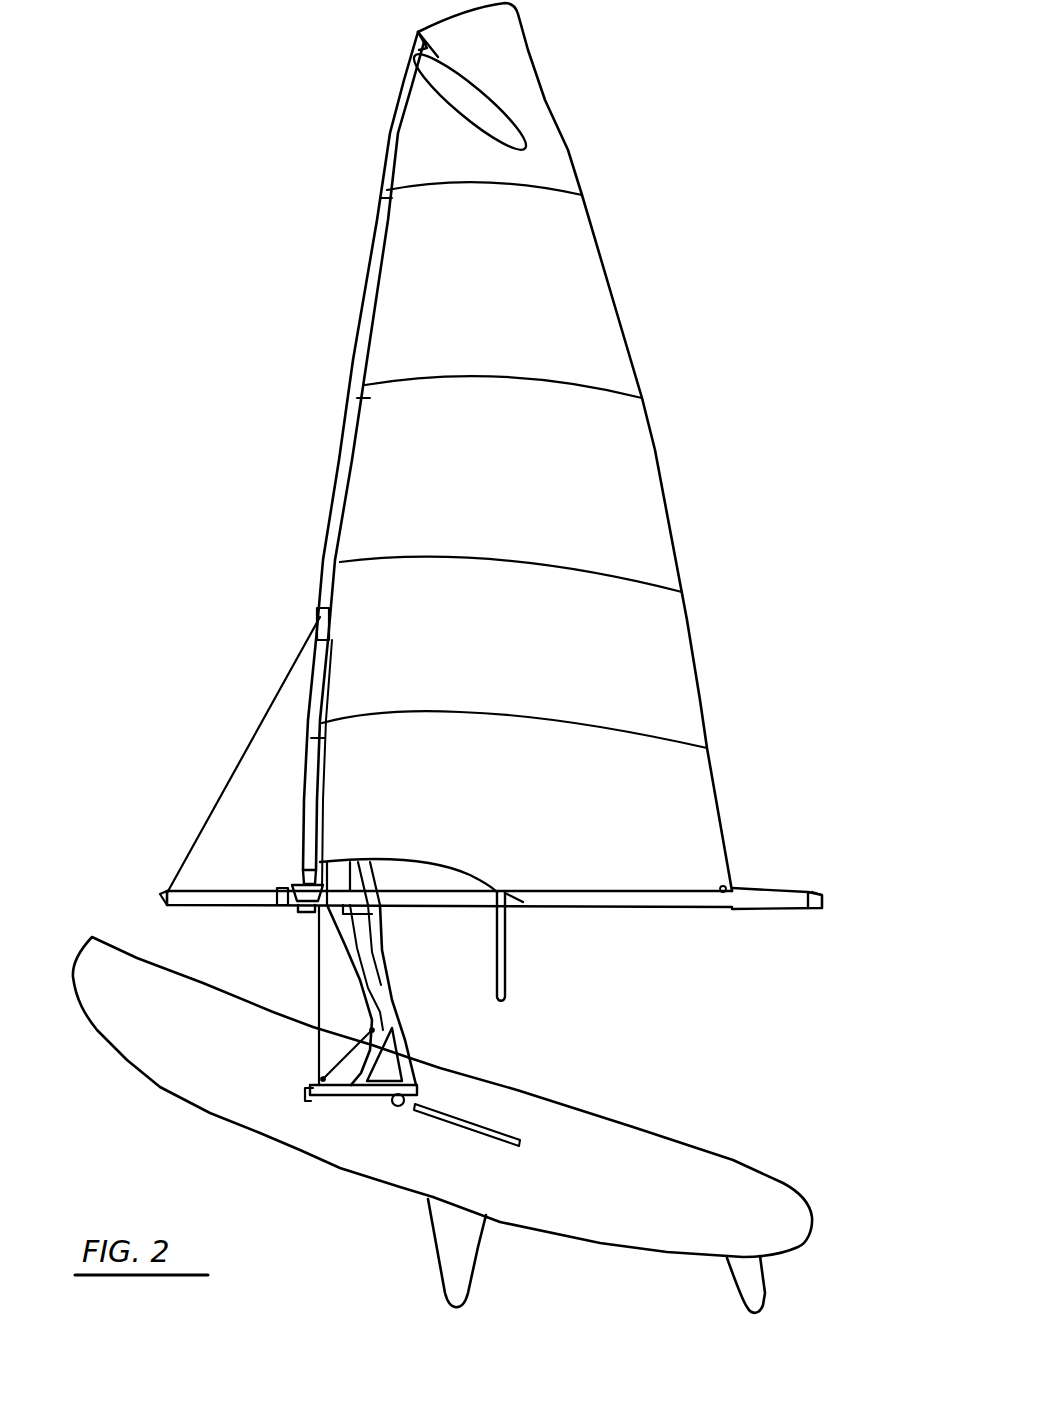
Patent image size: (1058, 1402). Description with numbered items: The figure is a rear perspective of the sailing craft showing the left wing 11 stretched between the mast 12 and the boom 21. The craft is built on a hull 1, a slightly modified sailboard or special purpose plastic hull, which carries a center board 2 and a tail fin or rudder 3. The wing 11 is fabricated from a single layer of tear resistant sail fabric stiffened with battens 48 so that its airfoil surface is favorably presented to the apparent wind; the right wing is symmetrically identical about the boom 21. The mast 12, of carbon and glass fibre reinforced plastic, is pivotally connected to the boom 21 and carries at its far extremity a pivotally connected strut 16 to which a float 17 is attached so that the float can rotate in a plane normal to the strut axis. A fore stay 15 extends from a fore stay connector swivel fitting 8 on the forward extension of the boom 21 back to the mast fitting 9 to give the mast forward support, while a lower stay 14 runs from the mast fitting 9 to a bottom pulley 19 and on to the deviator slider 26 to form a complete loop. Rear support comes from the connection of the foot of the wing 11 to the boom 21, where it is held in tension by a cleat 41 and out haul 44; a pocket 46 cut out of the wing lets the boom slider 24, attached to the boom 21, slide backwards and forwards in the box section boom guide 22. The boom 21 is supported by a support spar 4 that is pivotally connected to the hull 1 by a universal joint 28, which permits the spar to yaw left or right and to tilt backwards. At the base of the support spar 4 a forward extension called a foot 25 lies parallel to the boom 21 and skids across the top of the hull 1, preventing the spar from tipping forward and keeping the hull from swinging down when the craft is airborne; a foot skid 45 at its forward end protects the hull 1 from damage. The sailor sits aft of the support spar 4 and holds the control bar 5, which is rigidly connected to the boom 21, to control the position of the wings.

The hull 1 is at (442, 1097).
The center board 2 is at (470, 1253).
The tail fin or rudder 3 is at (764, 1287).
The support spar 4 is at (377, 995).
The control bar 5 is at (521, 946).
The fore stay connector swivel fitting 8 is at (144, 896).
The mast fitting 9 is at (304, 618).
The left wing 11 is at (545, 460).
The mast 12 is at (351, 472).
The lower stay 14 is at (304, 995).
The fore stay 15 is at (243, 755).
The strut 16 is at (448, 38).
The left float 17 is at (470, 102).
The bottom pulley 19 is at (330, 1057).
The boom 21 is at (193, 907).
The boom guide 22 is at (367, 900).
The boom slider 24 is at (407, 926).
The foot 25 is at (362, 1097).
The deviator slider 26 is at (372, 1058).
The universal joint 28 is at (387, 1118).
The cleat 41 is at (845, 909).
The out haul 44 is at (748, 876).
The foot skid 45 is at (287, 1110).
The pocket 46 is at (398, 853).
The battens 48 is at (511, 562).